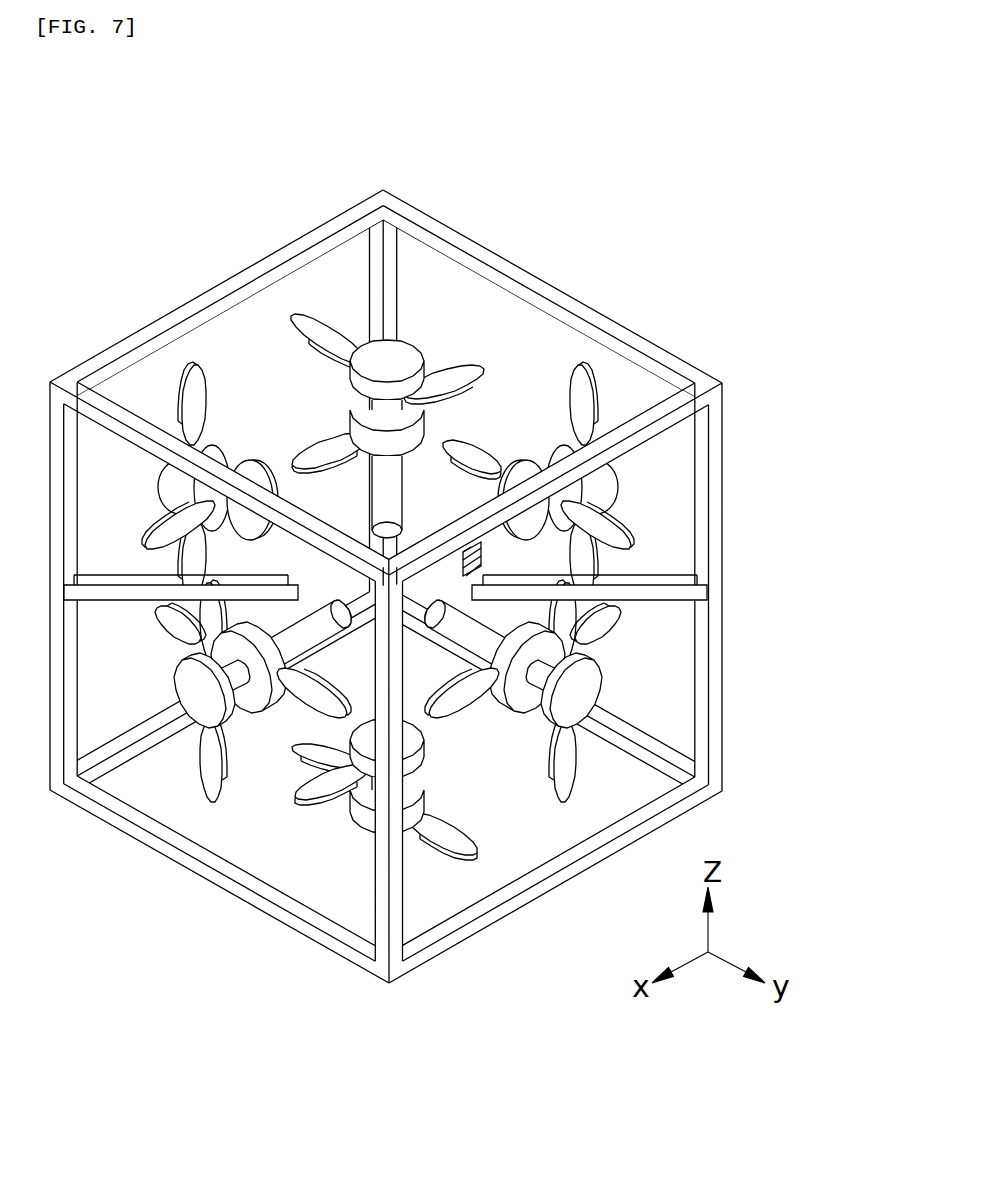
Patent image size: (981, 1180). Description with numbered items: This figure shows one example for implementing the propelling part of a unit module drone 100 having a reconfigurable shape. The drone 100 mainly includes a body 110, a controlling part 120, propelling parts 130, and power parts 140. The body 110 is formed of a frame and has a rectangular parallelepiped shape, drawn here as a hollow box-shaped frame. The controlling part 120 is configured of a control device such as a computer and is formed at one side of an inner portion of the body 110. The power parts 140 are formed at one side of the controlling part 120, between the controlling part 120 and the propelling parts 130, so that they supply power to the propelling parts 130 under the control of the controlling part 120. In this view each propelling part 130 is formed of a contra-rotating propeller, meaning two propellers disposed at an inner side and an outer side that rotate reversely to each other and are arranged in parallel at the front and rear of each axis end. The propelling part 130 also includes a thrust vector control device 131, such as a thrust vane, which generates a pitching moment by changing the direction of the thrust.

The unit module drone 100 is at (555, 215).
The body 110 is at (386, 538).
The controlling part 120 is at (352, 517).
The propelling part 130 is at (368, 352).
The thrust vector control device 131 is at (483, 557).
The power part 140 is at (390, 530).